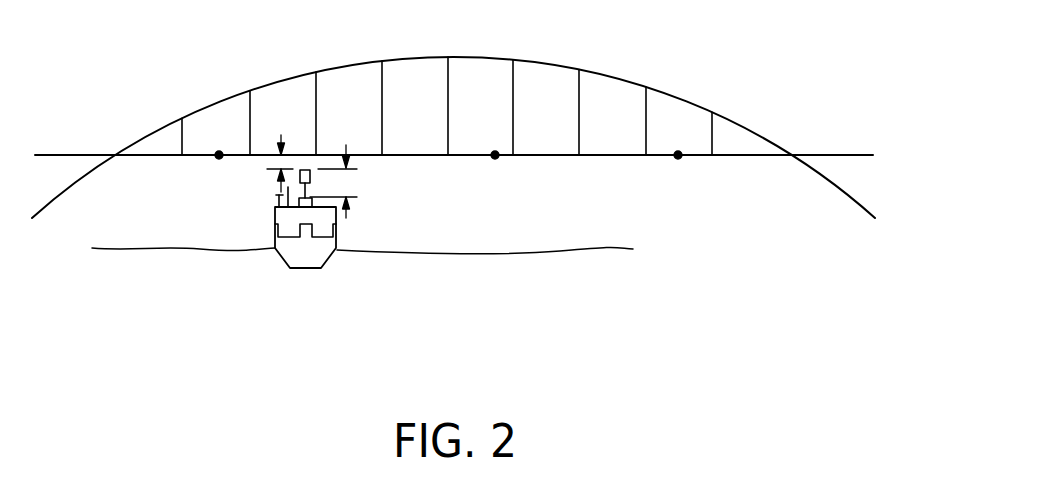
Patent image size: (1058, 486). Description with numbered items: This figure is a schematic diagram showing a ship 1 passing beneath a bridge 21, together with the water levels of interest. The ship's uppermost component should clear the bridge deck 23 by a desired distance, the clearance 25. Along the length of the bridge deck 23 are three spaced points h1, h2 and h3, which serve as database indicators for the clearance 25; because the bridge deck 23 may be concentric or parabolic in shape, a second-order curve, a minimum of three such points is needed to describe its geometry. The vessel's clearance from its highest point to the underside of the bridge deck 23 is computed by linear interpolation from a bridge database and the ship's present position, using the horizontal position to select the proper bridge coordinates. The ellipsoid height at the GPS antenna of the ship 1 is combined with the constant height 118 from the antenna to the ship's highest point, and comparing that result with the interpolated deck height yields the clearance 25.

The ship 1 is at (305, 253).
The bridge 21 is at (690, 54).
The bridge deck 23 is at (607, 155).
The clearance 25 is at (277, 162).
The constant height 118 is at (347, 182).
The first spaced point h1 is at (219, 158).
The second spaced point h2 is at (495, 158).
The third spaced point h3 is at (678, 158).